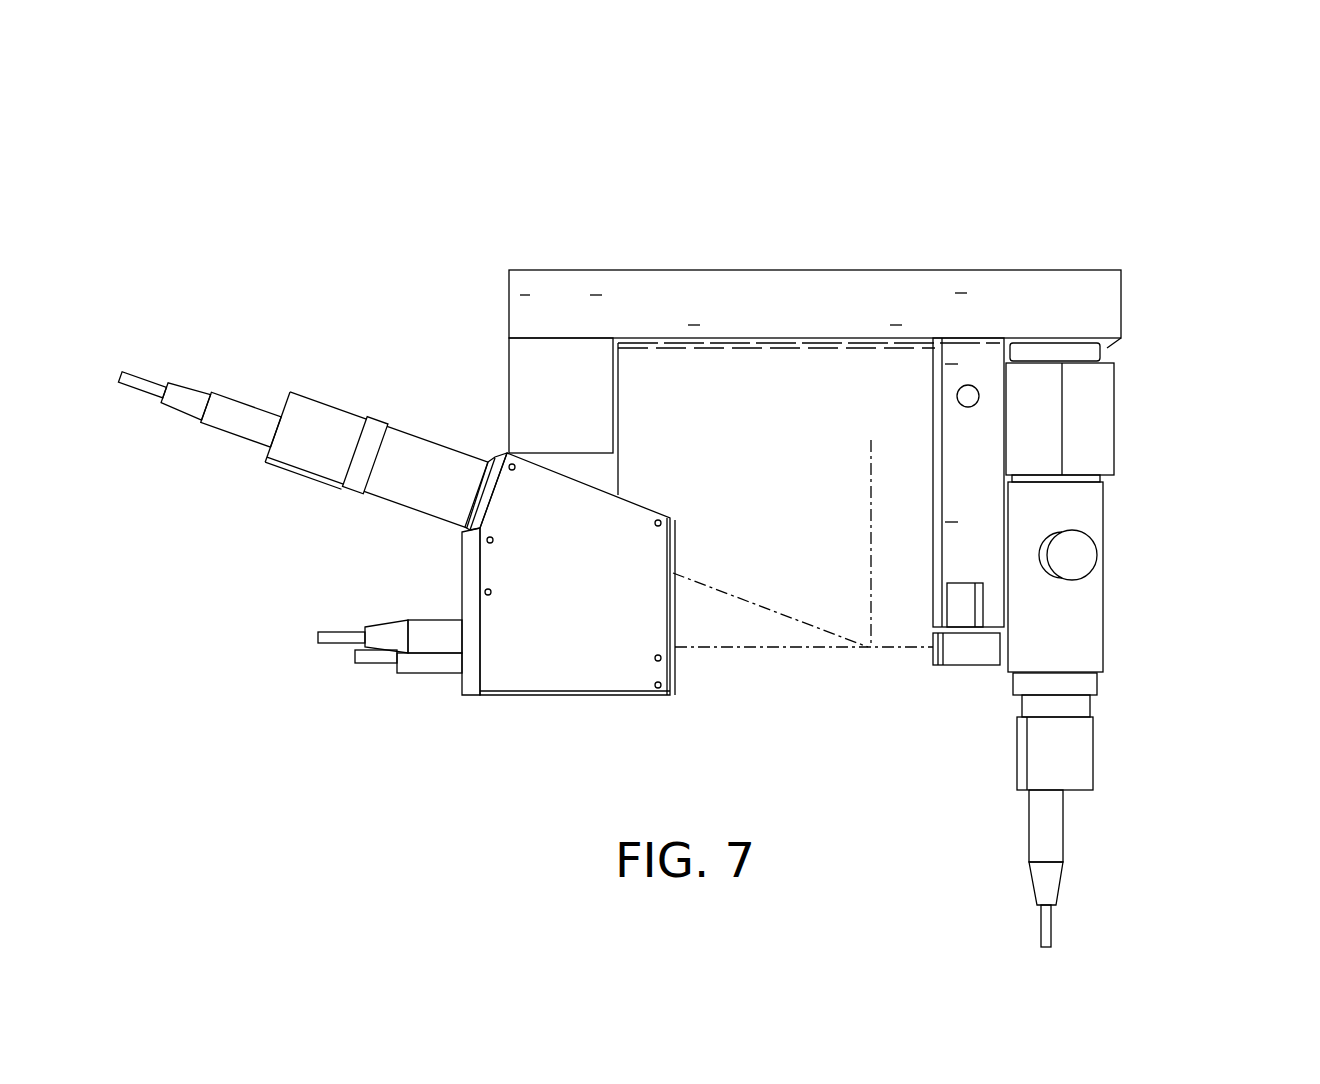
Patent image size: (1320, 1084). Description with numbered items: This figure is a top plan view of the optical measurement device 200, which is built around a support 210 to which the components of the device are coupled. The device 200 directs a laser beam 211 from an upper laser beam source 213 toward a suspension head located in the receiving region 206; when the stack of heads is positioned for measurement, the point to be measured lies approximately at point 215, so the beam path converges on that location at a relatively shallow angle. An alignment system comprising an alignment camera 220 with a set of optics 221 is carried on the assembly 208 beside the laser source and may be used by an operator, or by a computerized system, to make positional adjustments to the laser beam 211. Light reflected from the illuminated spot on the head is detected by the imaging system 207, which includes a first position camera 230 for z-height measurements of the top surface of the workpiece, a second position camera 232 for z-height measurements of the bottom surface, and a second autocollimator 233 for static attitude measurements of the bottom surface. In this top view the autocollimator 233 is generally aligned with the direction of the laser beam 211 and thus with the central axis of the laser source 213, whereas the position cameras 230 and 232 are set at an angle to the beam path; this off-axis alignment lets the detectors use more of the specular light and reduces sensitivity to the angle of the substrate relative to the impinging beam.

The optical measurement device 200 is at (740, 170).
The receiving region 206 is at (710, 462).
The imaging system 207 is at (415, 395).
The fixture assembly 208 is at (1156, 676).
The support 210 is at (793, 290).
The laser beam 211 is at (903, 647).
The upper laser beam source 213 is at (958, 650).
The point 215 is at (867, 647).
The alignment camera 220 is at (1082, 743).
The optics 221 is at (1090, 420).
The first position camera 230 is at (300, 408).
The second position camera 232 is at (407, 658).
The second autocollimator 233 is at (435, 647).